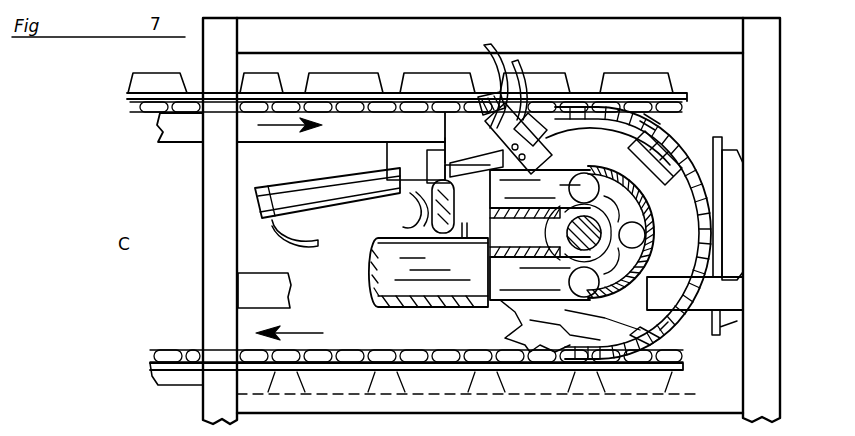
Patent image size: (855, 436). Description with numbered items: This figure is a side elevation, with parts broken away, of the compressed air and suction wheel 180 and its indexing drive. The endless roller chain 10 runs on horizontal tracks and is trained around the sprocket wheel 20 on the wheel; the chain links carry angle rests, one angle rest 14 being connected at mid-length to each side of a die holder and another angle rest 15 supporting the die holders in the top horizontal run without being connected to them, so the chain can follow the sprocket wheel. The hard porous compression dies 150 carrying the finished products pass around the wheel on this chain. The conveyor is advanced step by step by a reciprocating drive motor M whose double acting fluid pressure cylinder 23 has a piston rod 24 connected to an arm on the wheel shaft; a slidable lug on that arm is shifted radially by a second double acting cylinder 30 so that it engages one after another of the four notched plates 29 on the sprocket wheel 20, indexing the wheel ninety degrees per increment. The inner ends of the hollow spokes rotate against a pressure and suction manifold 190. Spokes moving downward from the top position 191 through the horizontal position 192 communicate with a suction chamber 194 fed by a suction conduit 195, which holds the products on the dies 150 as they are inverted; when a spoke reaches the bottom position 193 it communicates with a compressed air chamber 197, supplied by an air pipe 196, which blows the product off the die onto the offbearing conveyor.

The endless roller chain 10 is at (352, 350).
The angle rest 14 is at (722, 232).
The angle rest 15 is at (662, 333).
The sprocket wheel 20 is at (608, 125).
The double acting fluid pressure cylinder 23 is at (362, 176).
The piston rod 24 is at (458, 147).
The notched plate 29 is at (645, 337).
The double acting cylinder 30 is at (478, 97).
The hard porous compression die 150 is at (313, 73).
The compressed air and suction wheel 180 is at (648, 121).
The pressure and suction manifold 190 is at (548, 222).
The top spoke position 191 is at (548, 148).
The horizontal spoke position 192 is at (690, 175).
The bottom spoke position 193 is at (500, 332).
The suction chamber 194 is at (636, 214).
The suction conduit 195 is at (408, 218).
The air pipe 196 is at (427, 306).
The compressed air chamber 197 is at (526, 283).
The reciprocating drive motor M is at (318, 176).